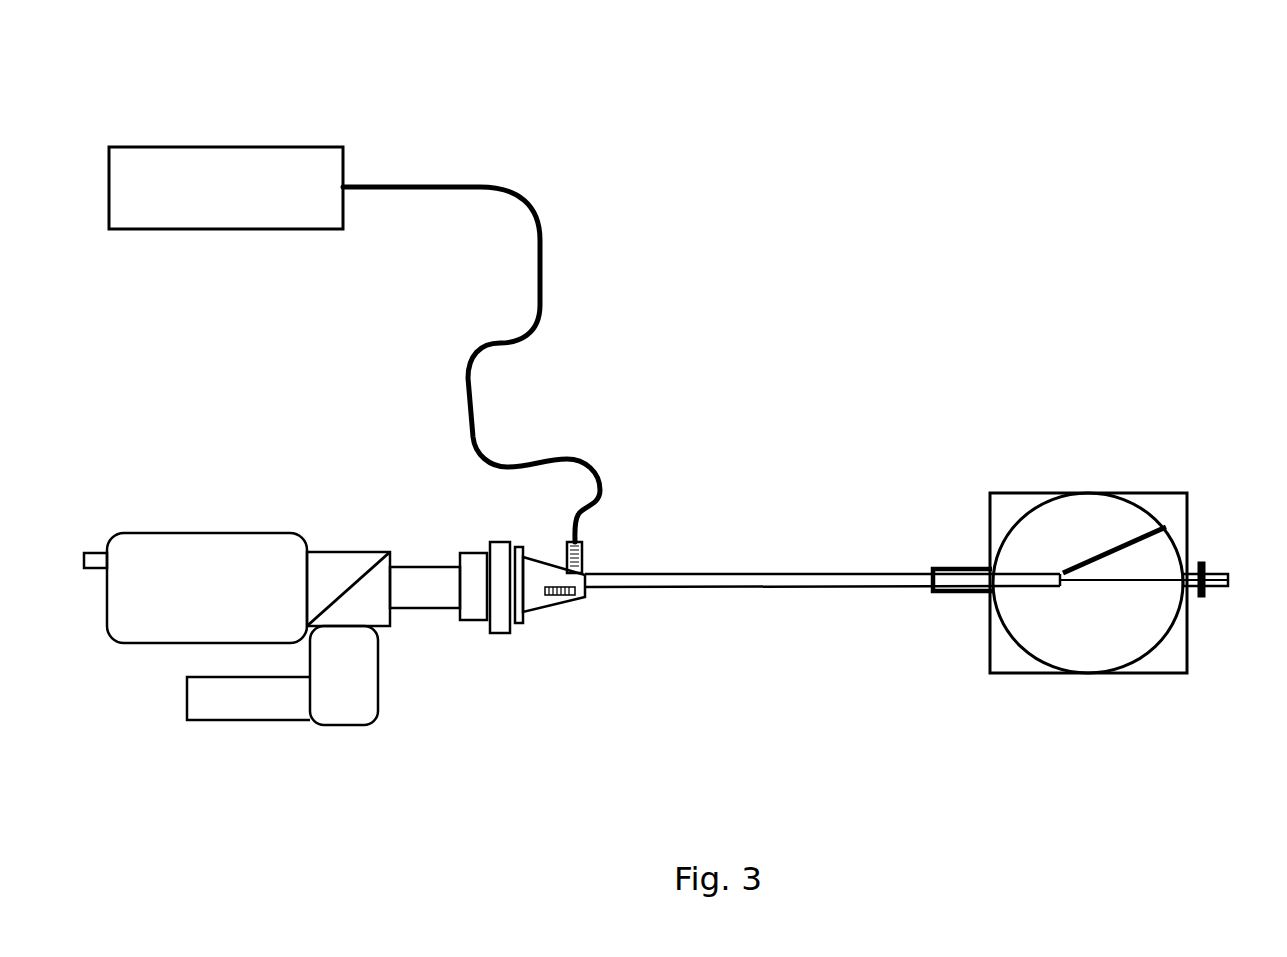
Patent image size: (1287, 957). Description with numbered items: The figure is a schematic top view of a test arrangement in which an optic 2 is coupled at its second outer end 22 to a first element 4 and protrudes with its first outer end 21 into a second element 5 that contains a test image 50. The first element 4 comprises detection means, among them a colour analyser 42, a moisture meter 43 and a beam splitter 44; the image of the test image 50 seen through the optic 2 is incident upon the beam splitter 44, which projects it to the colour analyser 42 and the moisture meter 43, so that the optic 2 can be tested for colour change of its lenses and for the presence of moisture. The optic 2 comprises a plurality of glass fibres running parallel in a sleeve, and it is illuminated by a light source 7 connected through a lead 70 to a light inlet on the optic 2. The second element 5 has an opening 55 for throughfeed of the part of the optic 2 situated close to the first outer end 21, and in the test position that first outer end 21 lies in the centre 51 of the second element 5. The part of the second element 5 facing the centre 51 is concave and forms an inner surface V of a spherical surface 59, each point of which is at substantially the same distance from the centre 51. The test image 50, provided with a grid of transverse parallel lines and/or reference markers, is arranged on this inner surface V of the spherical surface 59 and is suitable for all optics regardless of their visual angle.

The light source 7 is at (226, 154).
The lead 70 is at (563, 232).
The first element 4 is at (308, 643).
The moisture meter 43 is at (165, 577).
The beam splitter 44 is at (359, 556).
The colour analyser 42 is at (339, 714).
The second outer end 22 is at (545, 625).
The optic 2 is at (771, 569).
The opening 55 is at (959, 562).
The second element 5 is at (1069, 512).
The spherical surface 59 is at (1139, 498).
The first outer end 21 is at (1034, 561).
The centre 51 is at (1104, 576).
The test image 50 is at (1172, 605).
The inner surface V is at (1132, 652).